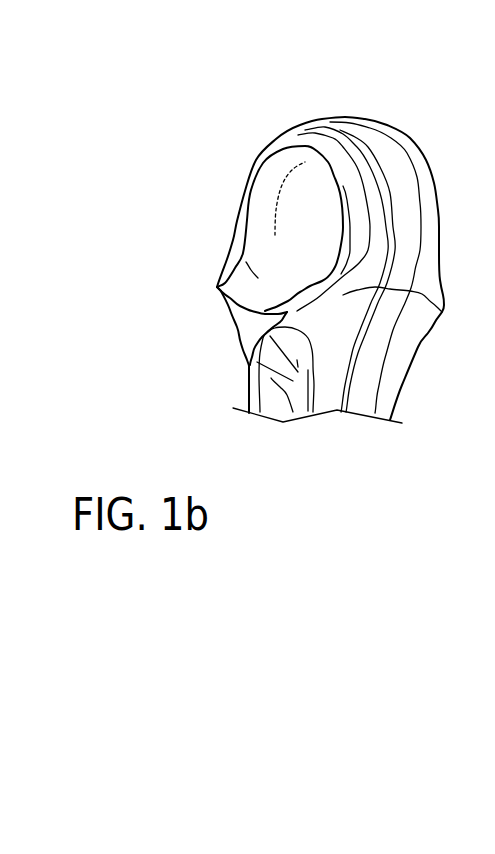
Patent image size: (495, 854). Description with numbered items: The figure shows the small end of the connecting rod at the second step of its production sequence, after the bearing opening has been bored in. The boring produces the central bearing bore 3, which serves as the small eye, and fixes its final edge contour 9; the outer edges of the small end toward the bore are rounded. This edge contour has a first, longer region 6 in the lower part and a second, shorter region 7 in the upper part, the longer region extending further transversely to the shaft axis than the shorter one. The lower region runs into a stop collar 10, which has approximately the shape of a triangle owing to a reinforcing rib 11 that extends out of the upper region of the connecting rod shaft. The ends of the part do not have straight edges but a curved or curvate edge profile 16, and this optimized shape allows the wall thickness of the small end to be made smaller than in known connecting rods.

The bearing bore 3 is at (297, 187).
The first, longer region 6 is at (247, 283).
The second, shorter region 7 is at (317, 155).
The final edge contour 9 is at (340, 178).
The stop collar 10 is at (248, 347).
The reinforcing rib 11 is at (277, 357).
The curvate edge profile 16 is at (237, 215).